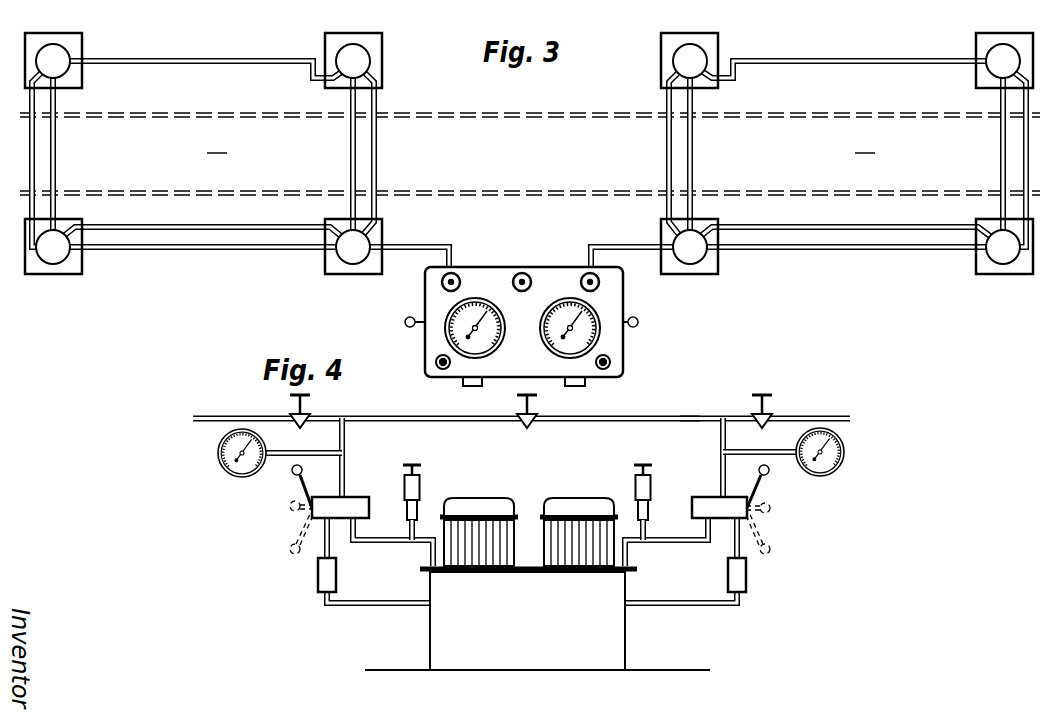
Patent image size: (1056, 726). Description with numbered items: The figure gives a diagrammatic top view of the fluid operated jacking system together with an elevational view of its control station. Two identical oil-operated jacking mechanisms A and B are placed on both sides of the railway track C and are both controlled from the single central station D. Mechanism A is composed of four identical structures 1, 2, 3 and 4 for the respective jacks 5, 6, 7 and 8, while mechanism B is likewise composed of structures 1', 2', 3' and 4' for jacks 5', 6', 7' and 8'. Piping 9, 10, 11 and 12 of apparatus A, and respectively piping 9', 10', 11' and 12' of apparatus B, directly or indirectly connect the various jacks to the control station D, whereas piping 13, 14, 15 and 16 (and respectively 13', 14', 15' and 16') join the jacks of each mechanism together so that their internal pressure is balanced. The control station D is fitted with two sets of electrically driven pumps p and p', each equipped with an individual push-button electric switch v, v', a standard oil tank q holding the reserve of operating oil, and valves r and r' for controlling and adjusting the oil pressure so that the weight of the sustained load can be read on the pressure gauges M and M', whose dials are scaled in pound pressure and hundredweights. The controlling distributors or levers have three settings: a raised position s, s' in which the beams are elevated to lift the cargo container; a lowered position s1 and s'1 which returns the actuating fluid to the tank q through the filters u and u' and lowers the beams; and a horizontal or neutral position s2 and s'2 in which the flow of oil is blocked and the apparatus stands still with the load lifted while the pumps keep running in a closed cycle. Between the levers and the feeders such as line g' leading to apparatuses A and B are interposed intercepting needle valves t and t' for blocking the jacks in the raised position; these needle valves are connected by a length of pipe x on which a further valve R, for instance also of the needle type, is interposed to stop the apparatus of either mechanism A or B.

In FIG. 3, the structure 1 is at (711, 255).
In FIG. 3, the structure 2 is at (664, 56).
In FIG. 3, the structure 3 is at (992, 46).
In FIG. 3, the structure 4 is at (1004, 265).
In FIG. 3, the jack 5 is at (697, 272).
In FIG. 3, the jack 6 is at (713, 48).
In FIG. 3, the jack 7 is at (975, 265).
In FIG. 3, the jack 8 is at (980, 71).
In FIG. 3, the piping 9 is at (632, 234).
In FIG. 4, the piping 9 is at (710, 398).
In FIG. 3, the piping 10 is at (721, 154).
In FIG. 3, the piping 11 is at (846, 268).
In FIG. 3, the piping 12 is at (975, 154).
In FIG. 3, the piping 13 is at (650, 154).
In FIG. 3, the piping 14 is at (846, 217).
In FIG. 3, the piping 15 is at (991, 160).
In FIG. 3, the piping 16 is at (844, 44).
In FIG. 3, the structure 1' is at (353, 266).
In FIG. 3, the structure 2' is at (376, 49).
In FIG. 3, the structure 3' is at (76, 46).
In FIG. 3, the structure 4' is at (60, 268).
In FIG. 3, the jack 5' is at (326, 257).
In FIG. 3, the jack 6' is at (332, 44).
In FIG. 3, the jack 7' is at (45, 274).
In FIG. 3, the jack 8' is at (83, 73).
In FIG. 3, the piping 9' is at (409, 234).
In FIG. 3, the piping 10' is at (331, 154).
In FIG. 3, the piping 11' is at (203, 271).
In FIG. 3, the piping 12' is at (89, 154).
In FIG. 3, the piping 13' is at (402, 154).
In FIG. 3, the piping 14' is at (203, 194).
In FIG. 3, the piping 15' is at (76, 160).
In FIG. 3, the piping 16' is at (206, 46).
In FIG. 3, the oil-operated jacking mechanism A is at (864, 141).
In FIG. 3, the oil-operated jacking mechanism B is at (217, 141).
In FIG. 3, the railway track C is at (128, 186).
In FIG. 3, the central control station D is at (512, 266).
In FIG. 4, the central control station D is at (505, 669).
In FIG. 3, the valve R is at (530, 278).
In FIG. 4, the valve R is at (520, 430).
In FIG. 3, the needle valve t is at (613, 285).
In FIG. 4, the needle valve t is at (785, 402).
In FIG. 3, the needle valve t' is at (428, 277).
In FIG. 4, the needle valve t' is at (321, 403).
In FIG. 3, the raised position of control lever s is at (654, 312).
In FIG. 4, the raised position of control lever s is at (783, 486).
In FIG. 3, the raised position of control lever s' is at (397, 321).
In FIG. 4, the raised position of control lever s' is at (279, 486).
In FIG. 4, the lowered position of control lever s1 is at (771, 551).
In FIG. 4, the neutral position of control lever s2 is at (771, 509).
In FIG. 4, the lowered position of control lever s'1 is at (273, 539).
In FIG. 4, the neutral position of control lever s'2 is at (272, 517).
In FIG. 3, the pressure gauge M is at (607, 328).
In FIG. 4, the pressure gauge M is at (819, 453).
In FIG. 3, the pressure gauge M' is at (439, 335).
In FIG. 4, the pressure gauge M' is at (262, 468).
In FIG. 3, the valve r is at (627, 373).
In FIG. 4, the valve r is at (626, 494).
In FIG. 3, the valve r' is at (431, 380).
In FIG. 4, the valve r' is at (432, 496).
In FIG. 3, the push-button electric switch v is at (583, 394).
In FIG. 3, the push-button electric switch v' is at (481, 394).
In FIG. 4, the pressure line g' is at (360, 396).
In FIG. 4, the length of pipe x is at (688, 416).
In FIG. 4, the electrically driven pump p is at (579, 512).
In FIG. 4, the electrically driven pump p' is at (491, 514).
In FIG. 4, the oil tank q is at (541, 617).
In FIG. 4, the filter u is at (721, 564).
In FIG. 4, the filter u' is at (336, 564).